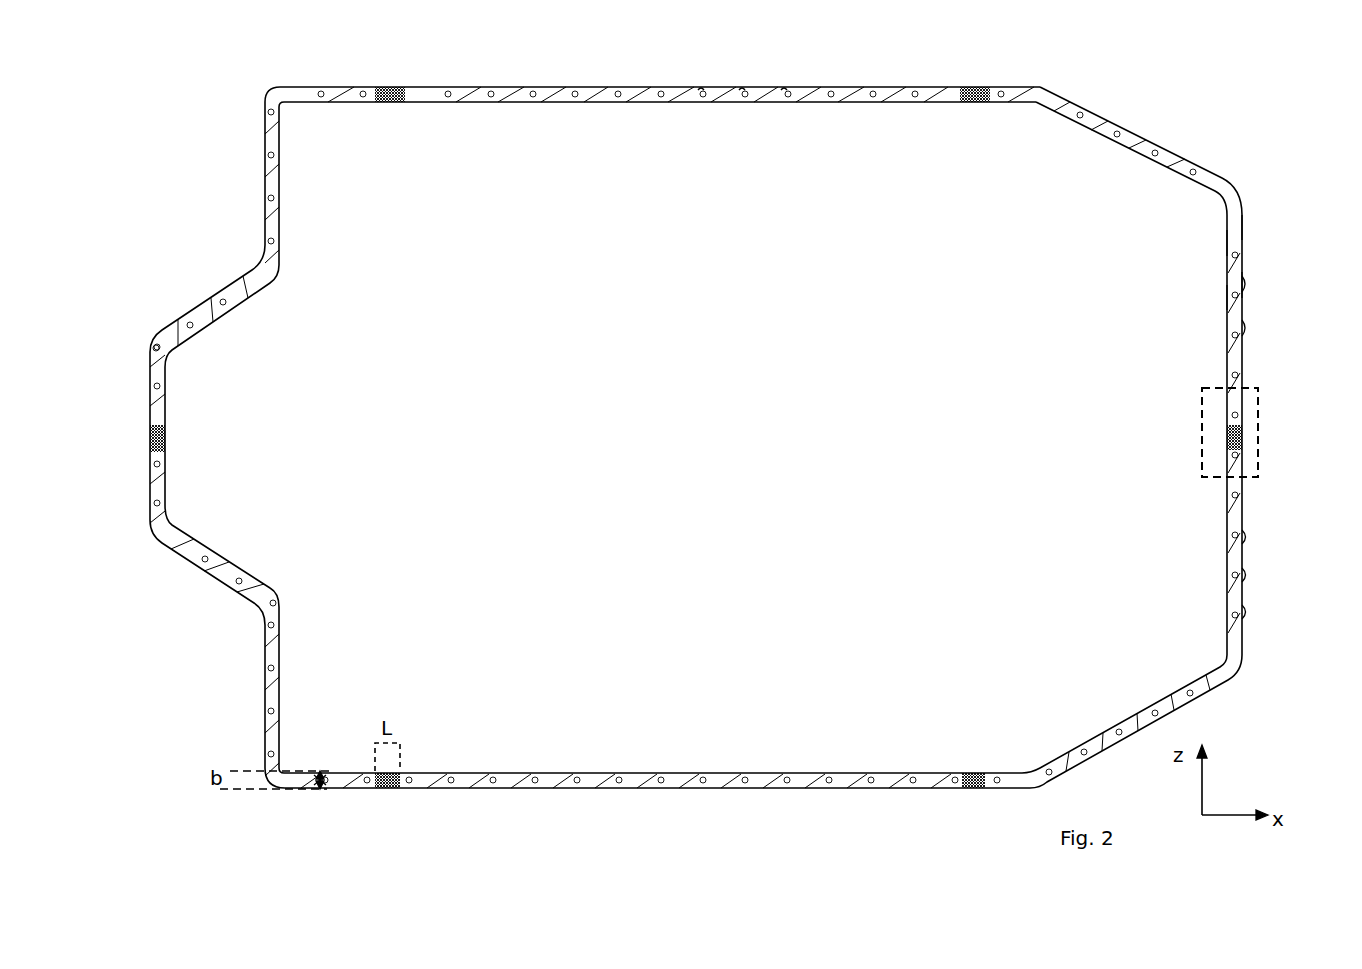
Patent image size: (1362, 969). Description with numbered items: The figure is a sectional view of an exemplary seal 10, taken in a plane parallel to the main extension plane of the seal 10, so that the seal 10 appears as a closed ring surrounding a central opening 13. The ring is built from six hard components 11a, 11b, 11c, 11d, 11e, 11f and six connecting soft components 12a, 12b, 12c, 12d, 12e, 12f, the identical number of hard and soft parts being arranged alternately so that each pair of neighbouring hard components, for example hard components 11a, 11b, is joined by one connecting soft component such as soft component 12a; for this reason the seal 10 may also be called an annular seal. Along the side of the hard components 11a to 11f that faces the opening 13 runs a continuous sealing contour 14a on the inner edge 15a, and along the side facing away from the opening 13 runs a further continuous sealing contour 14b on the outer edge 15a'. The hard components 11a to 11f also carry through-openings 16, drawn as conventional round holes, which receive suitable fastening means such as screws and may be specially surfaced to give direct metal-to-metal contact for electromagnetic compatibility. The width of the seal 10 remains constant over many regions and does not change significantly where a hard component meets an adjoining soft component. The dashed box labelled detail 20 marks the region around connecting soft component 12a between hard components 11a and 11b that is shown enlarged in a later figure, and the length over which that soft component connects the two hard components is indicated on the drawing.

The seal 10 is at (1092, 117).
The hard component 11a is at (1236, 328).
The hard component 11b is at (1236, 518).
The hard component 11c is at (758, 778).
The hard component 11d is at (264, 605).
The hard component 11e is at (268, 266).
The hard component 11f is at (626, 96).
The connecting soft component 12a is at (1236, 437).
The connecting soft component 12b is at (975, 781).
The connecting soft component 12c is at (388, 789).
The connecting soft component 12d is at (157, 440).
The connecting soft component 12e is at (391, 96).
The connecting soft component 12f is at (975, 96).
The opening 13 is at (681, 456).
The continuous sealing contour 14a is at (1213, 242).
The further continuous sealing contour 14b is at (1253, 225).
The inner edge 15a is at (1191, 297).
The outer edge 15a' is at (1288, 281).
The through-openings 16 is at (783, 90).
The detail 20 is at (1202, 405).